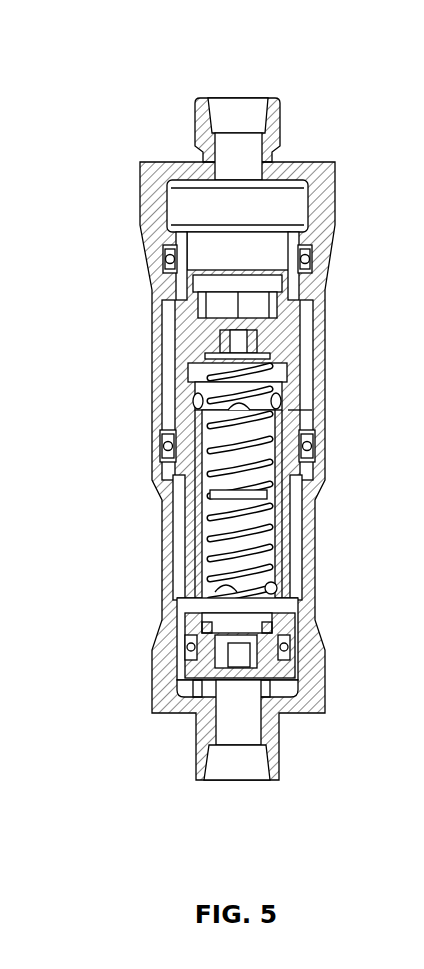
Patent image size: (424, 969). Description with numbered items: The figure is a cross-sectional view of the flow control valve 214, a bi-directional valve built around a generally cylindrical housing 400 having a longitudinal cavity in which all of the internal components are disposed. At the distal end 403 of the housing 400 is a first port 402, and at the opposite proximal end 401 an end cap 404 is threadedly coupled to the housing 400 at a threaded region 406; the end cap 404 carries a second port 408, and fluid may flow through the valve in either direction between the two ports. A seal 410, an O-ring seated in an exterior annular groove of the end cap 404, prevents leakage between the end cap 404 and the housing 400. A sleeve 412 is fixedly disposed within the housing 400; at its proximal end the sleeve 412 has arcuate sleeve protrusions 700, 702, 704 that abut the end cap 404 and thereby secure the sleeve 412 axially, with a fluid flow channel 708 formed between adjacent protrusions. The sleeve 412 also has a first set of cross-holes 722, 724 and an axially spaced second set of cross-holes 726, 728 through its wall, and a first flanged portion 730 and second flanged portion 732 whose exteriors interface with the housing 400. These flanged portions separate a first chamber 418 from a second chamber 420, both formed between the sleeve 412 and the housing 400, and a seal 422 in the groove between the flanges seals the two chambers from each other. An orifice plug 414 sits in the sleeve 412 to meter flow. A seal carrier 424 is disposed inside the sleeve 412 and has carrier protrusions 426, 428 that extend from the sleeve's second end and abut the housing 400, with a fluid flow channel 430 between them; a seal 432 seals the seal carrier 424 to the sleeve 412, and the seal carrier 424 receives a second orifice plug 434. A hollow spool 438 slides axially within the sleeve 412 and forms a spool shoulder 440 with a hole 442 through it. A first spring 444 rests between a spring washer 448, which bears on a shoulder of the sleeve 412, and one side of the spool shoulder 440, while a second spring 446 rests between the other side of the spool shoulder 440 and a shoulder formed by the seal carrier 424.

The flow control valve 214 is at (124, 122).
The housing 400 is at (333, 252).
The proximal end 401 is at (218, 30).
The first port 402 is at (241, 752).
The distal end 403 is at (221, 869).
The end cap 404 is at (197, 110).
The threaded region 406 is at (142, 194).
The second port 408 is at (247, 98).
The seal 410 is at (162, 257).
The sleeve 412 is at (180, 376).
The orifice plug 414 is at (217, 340).
The first chamber 418 is at (320, 350).
The second chamber 420 is at (302, 560).
The seal 422 is at (163, 450).
The seal carrier 424 is at (198, 630).
The carrier protrusion 426 is at (200, 686).
The carrier protrusion 428 is at (275, 686).
The fluid flow channel 430 is at (258, 716).
The seal 432 is at (290, 648).
The orifice plug 434 is at (222, 660).
The spool 438 is at (200, 530).
The spool shoulder 440 is at (202, 493).
The hole 442 is at (313, 503).
The first spring 444 is at (320, 457).
The second spring 446 is at (197, 553).
The spring washer 448 is at (178, 358).
The sleeve protrusion 700 is at (194, 301).
The sleeve protrusion 702 is at (264, 302).
The sleeve protrusion 704 is at (290, 300).
The fluid flow channel 708 is at (221, 297).
The cross-hole 722 is at (284, 402).
The cross-hole 724 is at (192, 400).
The cross-hole 726 is at (278, 590).
The cross-hole 728 is at (190, 587).
The first flanged portion 730 is at (307, 427).
The second flanged portion 732 is at (256, 492).